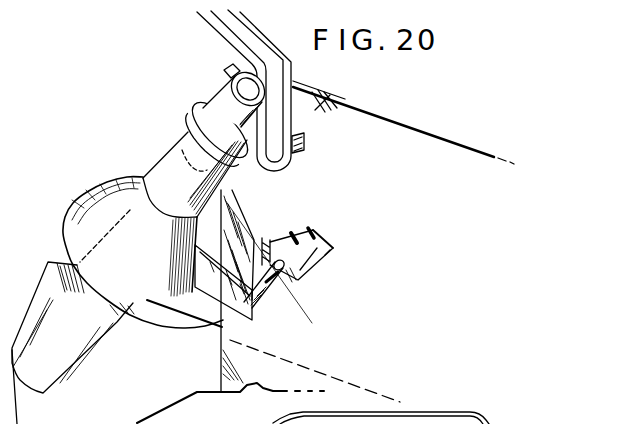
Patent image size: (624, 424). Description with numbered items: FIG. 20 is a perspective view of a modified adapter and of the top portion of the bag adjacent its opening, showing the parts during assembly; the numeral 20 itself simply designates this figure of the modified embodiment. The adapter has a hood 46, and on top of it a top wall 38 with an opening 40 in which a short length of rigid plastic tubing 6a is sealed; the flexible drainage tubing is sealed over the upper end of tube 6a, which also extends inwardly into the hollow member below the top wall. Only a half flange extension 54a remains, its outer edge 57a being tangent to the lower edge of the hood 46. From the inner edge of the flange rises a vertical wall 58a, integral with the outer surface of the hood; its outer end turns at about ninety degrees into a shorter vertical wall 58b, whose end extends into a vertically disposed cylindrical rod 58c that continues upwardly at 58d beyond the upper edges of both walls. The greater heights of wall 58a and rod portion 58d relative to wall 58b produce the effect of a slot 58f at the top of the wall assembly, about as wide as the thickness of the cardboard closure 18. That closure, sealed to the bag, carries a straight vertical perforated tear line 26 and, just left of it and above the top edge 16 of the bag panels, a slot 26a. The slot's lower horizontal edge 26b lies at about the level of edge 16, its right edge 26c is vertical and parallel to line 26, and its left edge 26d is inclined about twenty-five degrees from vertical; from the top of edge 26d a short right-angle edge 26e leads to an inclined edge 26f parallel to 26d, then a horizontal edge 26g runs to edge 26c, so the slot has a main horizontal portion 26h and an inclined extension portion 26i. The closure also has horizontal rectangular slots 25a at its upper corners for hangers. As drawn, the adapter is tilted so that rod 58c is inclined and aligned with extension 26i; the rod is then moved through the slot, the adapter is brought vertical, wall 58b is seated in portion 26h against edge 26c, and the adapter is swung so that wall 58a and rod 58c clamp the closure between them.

The top edge 16 is at (317, 367).
The cardboard closure 18 is at (457, 137).
The plate edge 20 is at (370, 137).
The horizontal rectangular shaped slots 25a is at (319, 107).
The perforated tear line 26 is at (228, 62).
The slot 26a is at (298, 236).
The lower horizontal edge 26b is at (292, 300).
The right edge 26c is at (265, 238).
The left edge 26d is at (332, 250).
The right-angle edge 26e is at (320, 236).
The inclined edge 26f is at (312, 233).
The horizontal edge 26g is at (292, 232).
The main horizontal portion 26h is at (281, 237).
The inclined extension portion 26i is at (318, 256).
The top wall 38 is at (197, 103).
The opening 40 is at (195, 125).
The hood 46 is at (118, 178).
The half flange extension 54a is at (222, 318).
The outer edge 57a is at (160, 325).
The vertical wall 58a is at (234, 240).
The vertical wall 58b is at (280, 308).
The cylindrical shaped rod 58c is at (288, 307).
The upper rod portion 58d is at (286, 287).
The slot 58f is at (284, 314).
The rigid plastic tubing 6a is at (225, 102).